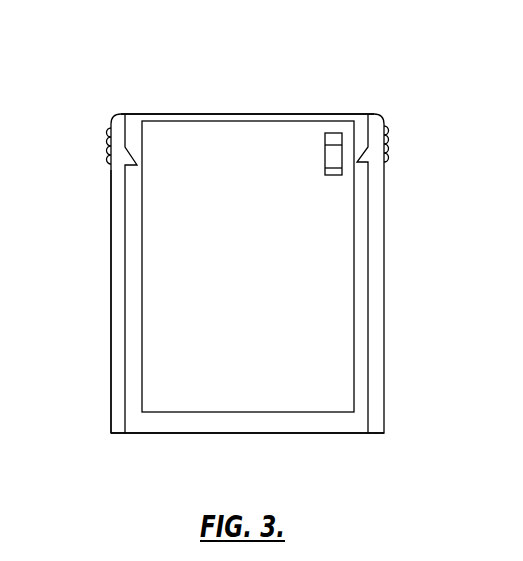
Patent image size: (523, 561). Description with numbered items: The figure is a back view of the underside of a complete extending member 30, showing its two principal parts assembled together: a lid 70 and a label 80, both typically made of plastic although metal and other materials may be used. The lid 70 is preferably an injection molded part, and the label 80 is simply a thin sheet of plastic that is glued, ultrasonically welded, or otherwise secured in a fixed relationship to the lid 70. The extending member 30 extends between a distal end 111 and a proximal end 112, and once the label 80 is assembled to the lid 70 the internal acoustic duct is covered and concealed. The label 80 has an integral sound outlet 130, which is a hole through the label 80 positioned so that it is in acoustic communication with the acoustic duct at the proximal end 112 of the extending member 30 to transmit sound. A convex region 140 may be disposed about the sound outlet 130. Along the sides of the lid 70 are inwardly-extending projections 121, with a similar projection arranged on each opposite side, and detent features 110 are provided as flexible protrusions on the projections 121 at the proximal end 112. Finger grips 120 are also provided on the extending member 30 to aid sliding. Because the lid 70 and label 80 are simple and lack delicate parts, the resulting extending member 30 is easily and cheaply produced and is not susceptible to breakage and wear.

The extending member 30 is at (95, 81).
The lid 70 is at (133, 255).
The label 80 is at (219, 140).
The detent features 110 is at (363, 157).
The distal end 111 is at (275, 435).
The proximal end 112 is at (277, 113).
The finger grips 120 is at (107, 147).
The inwardly-extending projection 121 is at (118, 347).
The sound outlet 130 is at (336, 153).
The convex region 140 is at (333, 140).